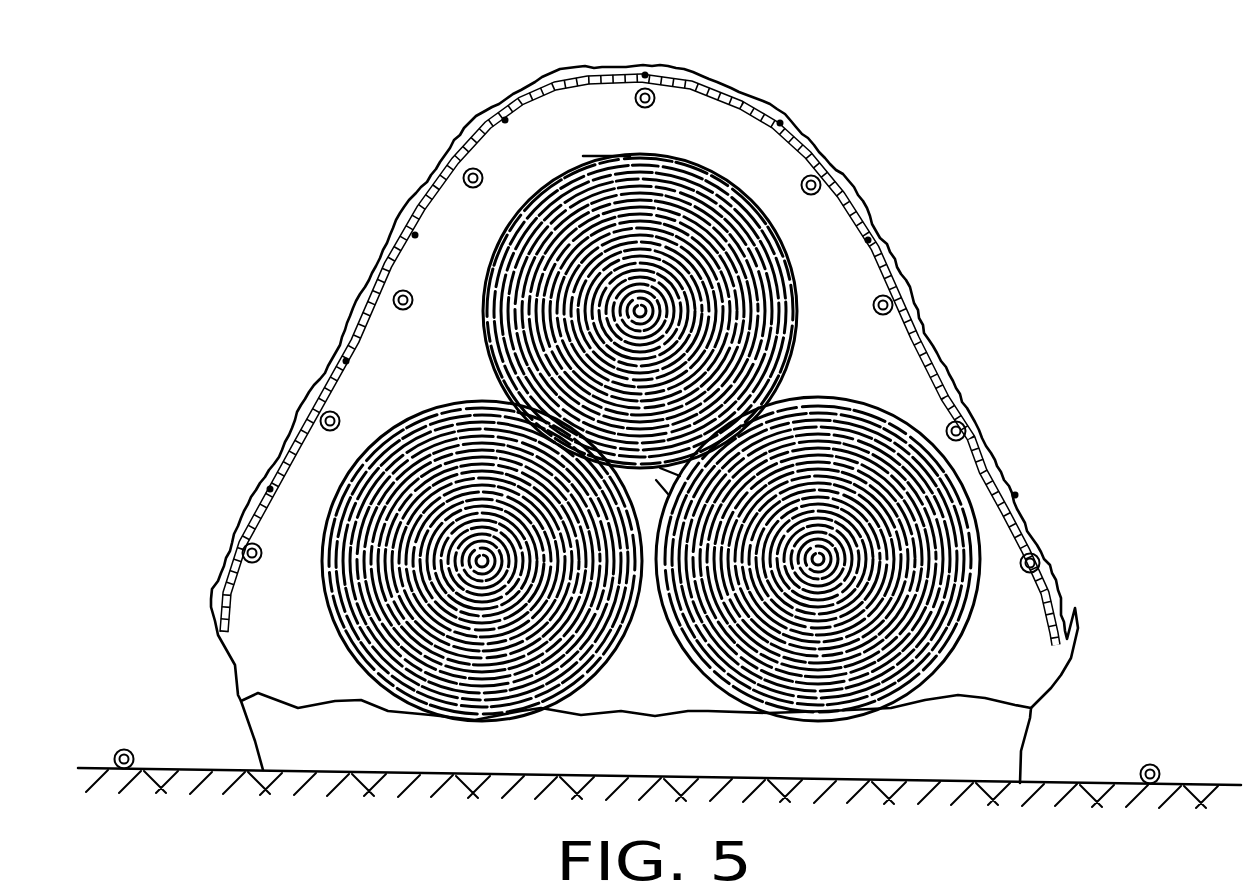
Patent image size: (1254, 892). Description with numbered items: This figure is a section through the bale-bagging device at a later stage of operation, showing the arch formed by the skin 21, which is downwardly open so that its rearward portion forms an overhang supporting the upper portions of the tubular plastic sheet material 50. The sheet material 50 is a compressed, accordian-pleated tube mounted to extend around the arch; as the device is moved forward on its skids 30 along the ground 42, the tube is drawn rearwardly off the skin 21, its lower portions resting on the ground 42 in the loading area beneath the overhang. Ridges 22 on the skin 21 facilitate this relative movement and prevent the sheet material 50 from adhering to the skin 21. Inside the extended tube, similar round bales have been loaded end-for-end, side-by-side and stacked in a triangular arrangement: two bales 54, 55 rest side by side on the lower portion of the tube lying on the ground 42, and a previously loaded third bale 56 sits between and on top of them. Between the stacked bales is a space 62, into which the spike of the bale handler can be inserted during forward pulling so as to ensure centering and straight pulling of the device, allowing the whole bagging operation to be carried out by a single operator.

The skin 21 is at (980, 430).
The ridges 22 is at (937, 338).
The skids 30 is at (113, 742).
The ground 42 is at (1061, 773).
The tubular plastic sheet material 50 is at (853, 197).
The bale 54 is at (961, 524).
The bale 55 is at (408, 458).
The third bale 56 is at (651, 154).
The space between the stacked bales 62 is at (763, 396).